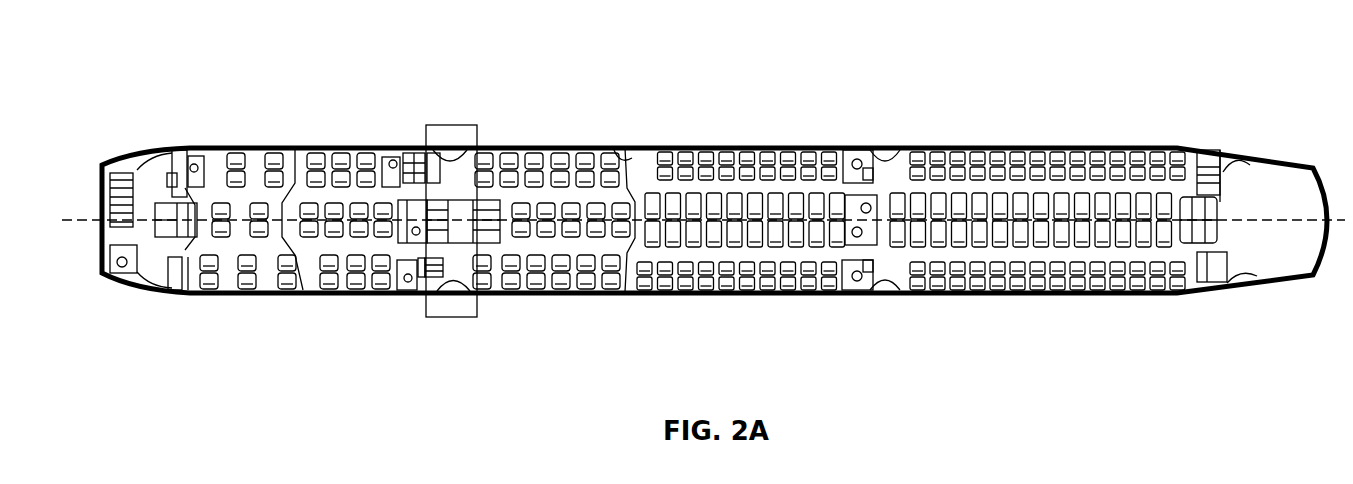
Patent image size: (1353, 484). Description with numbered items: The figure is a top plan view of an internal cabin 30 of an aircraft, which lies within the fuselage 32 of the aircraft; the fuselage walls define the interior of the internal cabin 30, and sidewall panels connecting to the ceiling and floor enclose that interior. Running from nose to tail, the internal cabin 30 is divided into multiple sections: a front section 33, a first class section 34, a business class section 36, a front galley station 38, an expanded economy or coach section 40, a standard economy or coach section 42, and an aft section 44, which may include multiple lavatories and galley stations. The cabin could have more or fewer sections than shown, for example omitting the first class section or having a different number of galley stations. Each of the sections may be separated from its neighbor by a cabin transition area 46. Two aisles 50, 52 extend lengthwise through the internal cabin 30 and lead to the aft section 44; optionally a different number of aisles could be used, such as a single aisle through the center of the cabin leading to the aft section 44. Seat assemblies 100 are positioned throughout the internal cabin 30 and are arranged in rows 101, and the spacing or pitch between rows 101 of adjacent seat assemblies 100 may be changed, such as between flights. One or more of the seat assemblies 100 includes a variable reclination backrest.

The internal cabin 30 is at (243, 52).
The fuselage 32 is at (574, 108).
The front section 33 is at (160, 308).
The first class section 34 is at (257, 293).
The business class section 36 is at (326, 148).
The front galley station 38 is at (451, 310).
The expanded economy or coach section 40 is at (553, 293).
The standard economy or coach section 42 is at (680, 148).
The aft section 44 is at (1248, 175).
The cabin transition area 46 is at (168, 148).
The aisle 50 is at (1043, 188).
The aisle 52 is at (1060, 258).
The seat assembly 100 is at (810, 148).
The row 101 is at (803, 140).